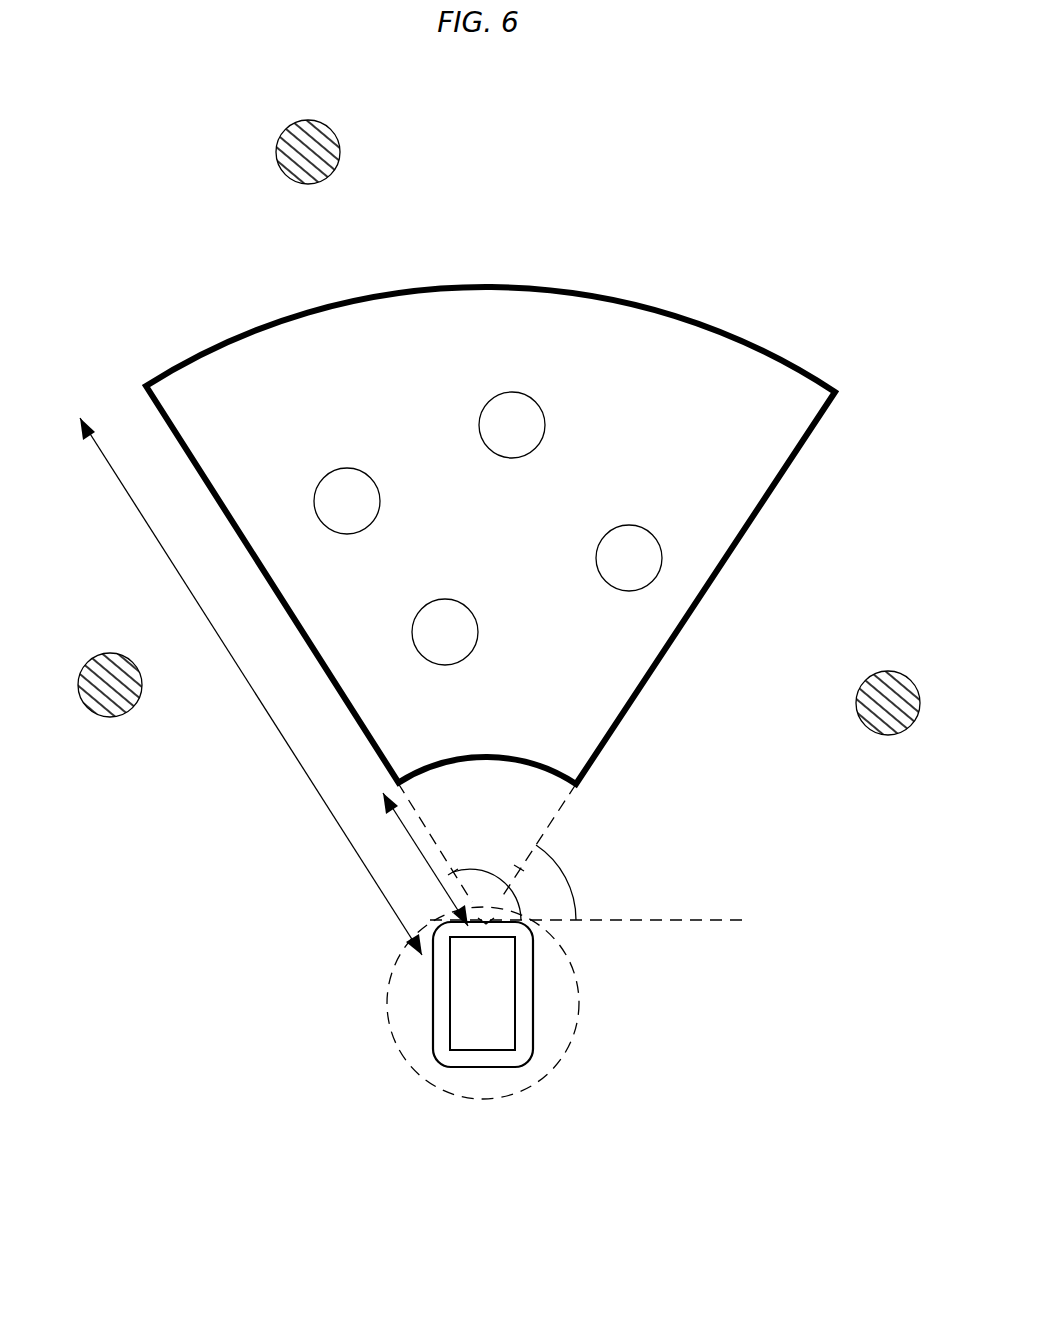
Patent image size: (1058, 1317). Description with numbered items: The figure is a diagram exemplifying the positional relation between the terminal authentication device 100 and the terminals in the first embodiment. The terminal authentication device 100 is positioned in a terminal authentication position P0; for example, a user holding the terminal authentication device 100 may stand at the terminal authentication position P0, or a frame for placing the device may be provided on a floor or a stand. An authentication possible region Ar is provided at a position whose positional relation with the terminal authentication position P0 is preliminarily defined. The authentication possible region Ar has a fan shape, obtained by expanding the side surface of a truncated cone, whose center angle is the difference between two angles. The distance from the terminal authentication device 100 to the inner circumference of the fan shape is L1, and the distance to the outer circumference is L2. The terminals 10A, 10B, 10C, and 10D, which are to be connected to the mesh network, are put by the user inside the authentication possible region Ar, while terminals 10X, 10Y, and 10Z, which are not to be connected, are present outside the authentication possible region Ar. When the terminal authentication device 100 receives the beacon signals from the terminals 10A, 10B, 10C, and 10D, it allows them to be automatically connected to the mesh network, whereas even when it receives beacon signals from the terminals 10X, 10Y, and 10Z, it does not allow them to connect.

The terminal 10A is at (346, 468).
The terminal 10B is at (512, 392).
The terminal 10C is at (445, 599).
The terminal 10D is at (629, 525).
The terminal 10X is at (110, 653).
The terminal 10Y is at (307, 120).
The terminal 10Z is at (888, 671).
The terminal authentication device 100 is at (483, 1068).
The authentication possible region Ar is at (545, 284).
The terminal authentication position P0 is at (557, 1078).
The distance to inner circumference L1 is at (425, 859).
The distance to outer circumference L2 is at (251, 686).